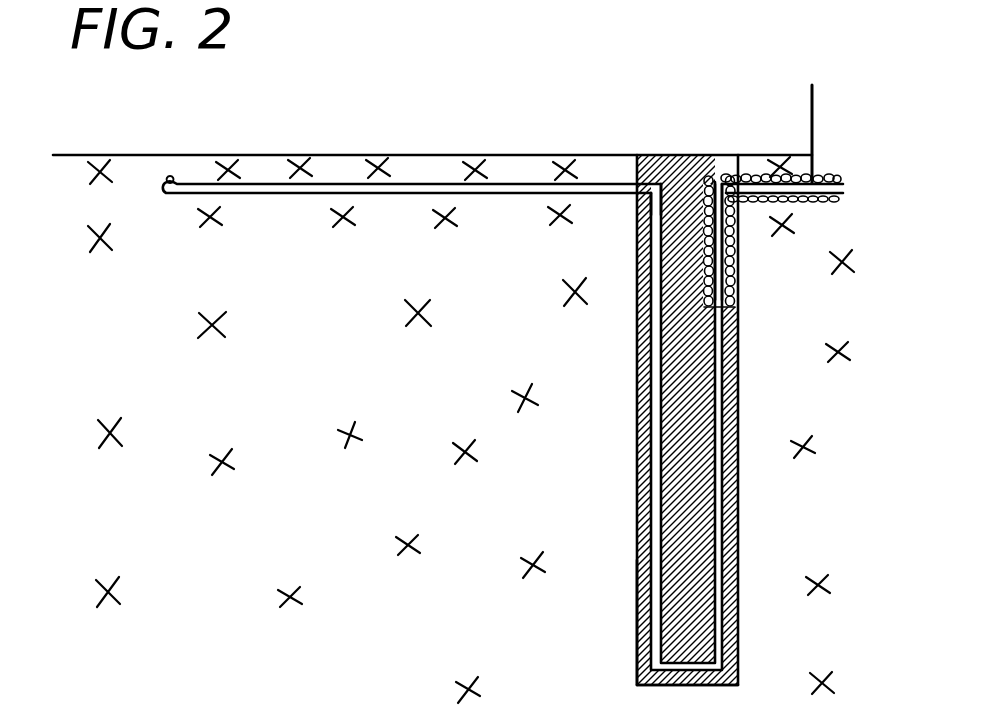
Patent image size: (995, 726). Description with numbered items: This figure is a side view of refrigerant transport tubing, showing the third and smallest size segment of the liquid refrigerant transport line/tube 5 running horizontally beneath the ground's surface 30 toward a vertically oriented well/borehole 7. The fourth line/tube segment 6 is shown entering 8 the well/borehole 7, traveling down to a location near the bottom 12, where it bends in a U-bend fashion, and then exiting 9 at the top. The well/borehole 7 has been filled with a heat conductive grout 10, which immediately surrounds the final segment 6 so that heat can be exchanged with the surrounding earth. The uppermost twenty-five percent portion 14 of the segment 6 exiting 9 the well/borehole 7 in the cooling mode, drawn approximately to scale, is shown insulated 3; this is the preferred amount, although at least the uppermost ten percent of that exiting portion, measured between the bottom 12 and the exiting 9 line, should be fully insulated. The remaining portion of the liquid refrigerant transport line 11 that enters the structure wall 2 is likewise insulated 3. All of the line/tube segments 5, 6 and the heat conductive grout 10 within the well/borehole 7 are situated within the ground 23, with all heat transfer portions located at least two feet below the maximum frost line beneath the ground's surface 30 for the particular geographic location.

The structure wall 2 is at (813, 140).
The insulation 3 is at (757, 176).
The liquid refrigerant transport line/tube 5 is at (279, 194).
The fourth line/tube segment 6 is at (656, 477).
The well/borehole 7 is at (634, 583).
The entering point 8 is at (648, 180).
The exiting point 9 is at (722, 184).
The heat conductive grout 10 is at (683, 515).
The remaining portion of the liquid refrigerant transport line 11 is at (783, 193).
The bottom of the well/borehole 12 is at (635, 680).
The uppermost 25% portion 14 is at (703, 308).
The ground 23 is at (427, 307).
The ground's surface 30 is at (342, 152).